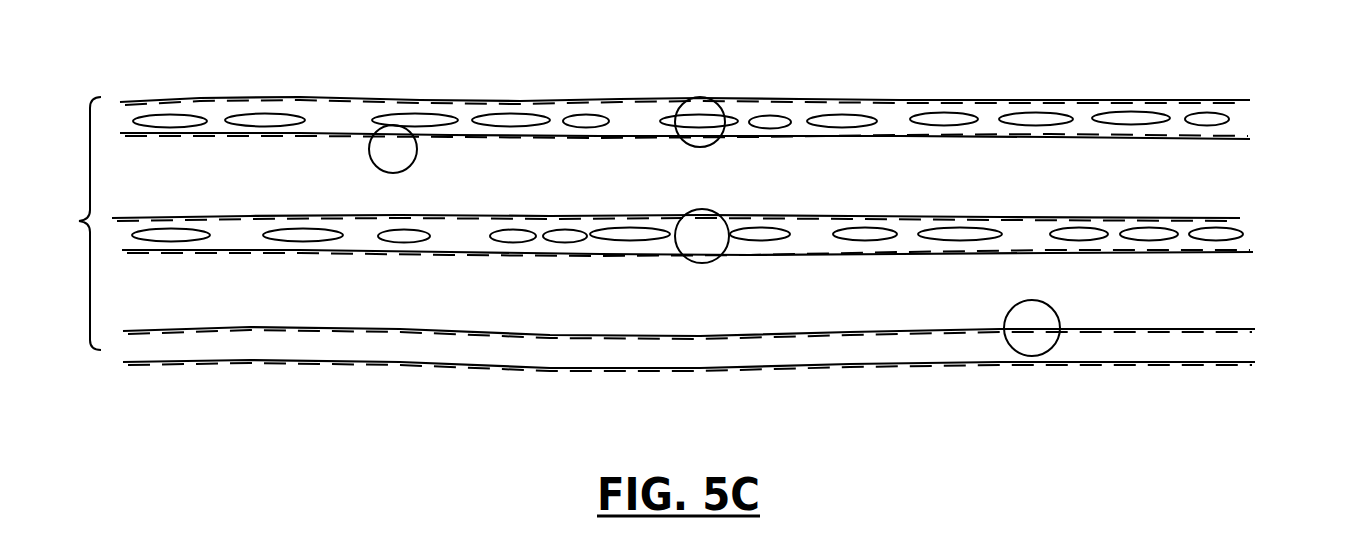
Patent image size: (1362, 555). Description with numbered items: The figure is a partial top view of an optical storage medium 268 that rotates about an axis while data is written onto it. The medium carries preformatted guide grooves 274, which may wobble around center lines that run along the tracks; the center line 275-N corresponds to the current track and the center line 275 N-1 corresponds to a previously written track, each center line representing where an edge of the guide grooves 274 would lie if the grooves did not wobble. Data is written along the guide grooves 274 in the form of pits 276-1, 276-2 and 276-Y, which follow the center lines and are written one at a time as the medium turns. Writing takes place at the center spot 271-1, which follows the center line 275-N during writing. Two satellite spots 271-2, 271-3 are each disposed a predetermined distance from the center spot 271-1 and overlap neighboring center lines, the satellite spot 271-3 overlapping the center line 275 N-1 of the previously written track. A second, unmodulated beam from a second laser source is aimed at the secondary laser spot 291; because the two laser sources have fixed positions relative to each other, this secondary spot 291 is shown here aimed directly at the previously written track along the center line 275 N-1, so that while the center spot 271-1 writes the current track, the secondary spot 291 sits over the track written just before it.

The optical storage medium 268 is at (64, 223).
The secondary laser spot 291 is at (700, 97).
The center spot 271-1 is at (715, 263).
The satellite spot 271-2 is at (370, 146).
The satellite spot 271-3 is at (1008, 322).
The guide grooves 274 is at (471, 370).
The center line 275 N-1 is at (1228, 139).
The center line 275-N is at (1224, 254).
The pit 276-Y is at (398, 247).
The pit 276-1 is at (592, 250).
The pit 276-2 is at (517, 254).